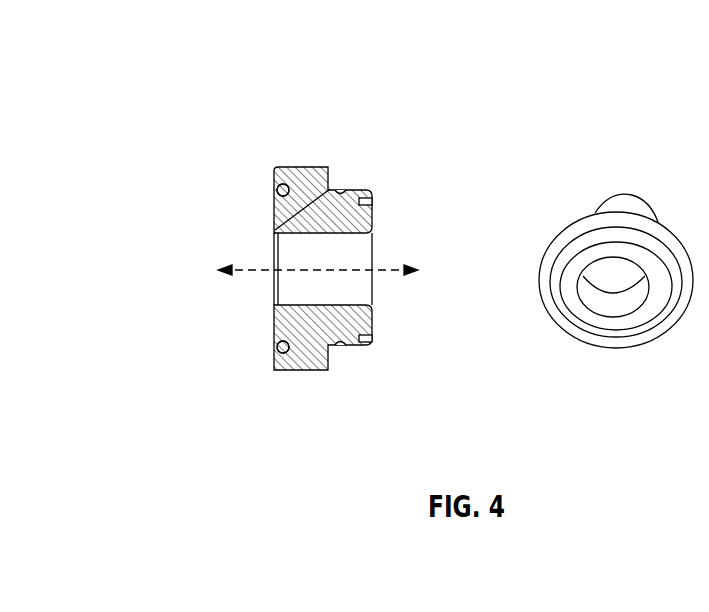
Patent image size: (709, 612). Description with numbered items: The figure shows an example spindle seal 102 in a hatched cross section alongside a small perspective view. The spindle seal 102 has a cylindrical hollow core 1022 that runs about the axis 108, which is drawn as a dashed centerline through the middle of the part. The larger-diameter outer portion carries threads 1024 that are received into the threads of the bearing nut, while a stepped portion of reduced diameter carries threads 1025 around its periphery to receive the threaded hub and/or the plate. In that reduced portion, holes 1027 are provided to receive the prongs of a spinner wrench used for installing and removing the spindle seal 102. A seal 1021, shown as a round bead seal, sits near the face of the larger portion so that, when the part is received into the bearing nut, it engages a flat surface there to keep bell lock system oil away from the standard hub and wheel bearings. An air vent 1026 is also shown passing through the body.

The spindle seal 102 is at (229, 62).
The seal 1021 is at (274, 188).
The cylindrical hollow core 1022 is at (294, 283).
The threads 1024 is at (299, 166).
The threads 1025 is at (364, 190).
The air vent 1026 is at (331, 188).
The holes 1027 is at (375, 201).
The axis 108 is at (241, 267).